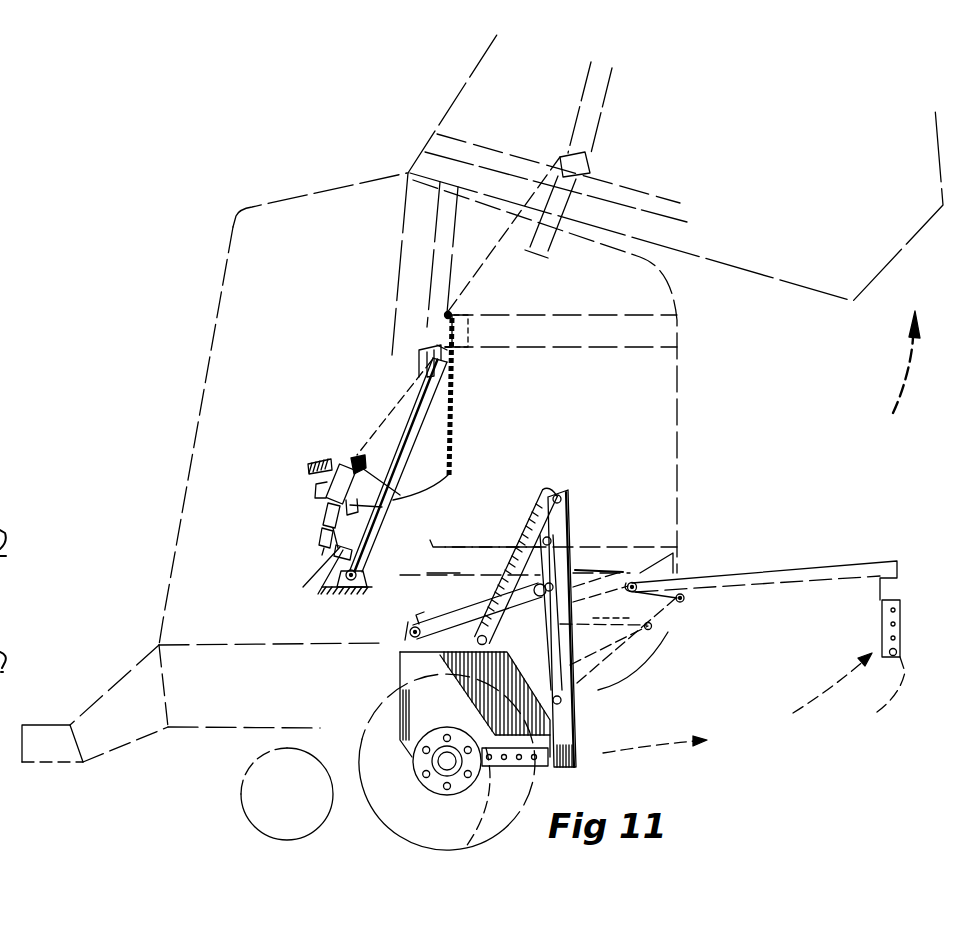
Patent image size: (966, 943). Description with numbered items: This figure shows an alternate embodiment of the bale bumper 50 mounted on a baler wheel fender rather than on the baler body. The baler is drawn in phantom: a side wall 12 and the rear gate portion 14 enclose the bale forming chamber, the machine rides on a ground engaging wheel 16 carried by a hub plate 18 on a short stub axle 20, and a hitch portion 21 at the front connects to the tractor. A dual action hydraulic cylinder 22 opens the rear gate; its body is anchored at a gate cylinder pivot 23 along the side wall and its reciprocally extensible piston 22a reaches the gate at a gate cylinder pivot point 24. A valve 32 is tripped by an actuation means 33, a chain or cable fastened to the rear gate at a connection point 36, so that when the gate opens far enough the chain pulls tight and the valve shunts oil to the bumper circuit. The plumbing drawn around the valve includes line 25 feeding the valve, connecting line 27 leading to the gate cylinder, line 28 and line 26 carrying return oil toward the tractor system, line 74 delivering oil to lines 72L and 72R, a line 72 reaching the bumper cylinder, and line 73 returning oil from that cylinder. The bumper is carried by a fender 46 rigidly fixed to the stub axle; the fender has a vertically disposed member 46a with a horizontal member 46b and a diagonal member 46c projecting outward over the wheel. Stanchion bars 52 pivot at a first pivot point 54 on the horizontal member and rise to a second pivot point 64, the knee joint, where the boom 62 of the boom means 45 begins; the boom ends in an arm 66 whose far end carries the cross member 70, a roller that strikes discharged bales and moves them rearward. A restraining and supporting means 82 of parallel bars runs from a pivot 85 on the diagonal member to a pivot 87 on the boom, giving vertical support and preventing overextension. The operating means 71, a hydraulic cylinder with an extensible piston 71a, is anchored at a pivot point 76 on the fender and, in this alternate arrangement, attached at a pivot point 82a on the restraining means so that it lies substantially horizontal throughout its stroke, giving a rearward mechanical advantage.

The side wall 12 is at (210, 297).
The rear gate portion 14 is at (846, 300).
The ground engaging wheel 16 is at (390, 808).
The hub plate 18 is at (450, 797).
The stub axle 20 is at (447, 766).
The hitch portion 21 is at (55, 764).
The dual action hydraulic cylinder 22 is at (410, 414).
The reciprocally extensible piston 22a is at (458, 347).
The gate cylinder pivot 23 is at (368, 580).
The gate cylinder pivot point 24 is at (473, 324).
The hydraulic line 25 is at (318, 484).
The hydraulic line 26 is at (414, 362).
The connecting line 27 is at (364, 541).
The return line 28 is at (440, 350).
The valve 32 is at (308, 466).
The actuation means 33 is at (508, 228).
The connection point 36 is at (561, 155).
The boom means 45 is at (580, 496).
The fender 46 is at (385, 653).
The vertically disposed member 46a is at (400, 703).
The horizontal member 46b is at (400, 661).
The diagonal member 46c is at (468, 722).
The bale bumper 50 is at (718, 502).
The stanchion bar 52 is at (523, 522).
The first pivot point 54 is at (443, 687).
The boom 62 is at (762, 572).
The second pivot point 64 is at (558, 495).
The arm 66 is at (882, 626).
The cross member 70 is at (685, 750).
The bale discharge operating means 71 is at (472, 592).
The reciprocally extensible piston 71a is at (603, 609).
The hydraulic line 72 is at (422, 620).
The hydraulic line 72L is at (320, 537).
The hydraulic line 72R is at (304, 559).
The return line 73 is at (419, 393).
The hydraulic line 74 is at (328, 506).
The pivot point 76 is at (409, 633).
The restraining and supporting means 82 is at (578, 537).
The pivot point 82a is at (563, 583).
The pivot 85 is at (574, 718).
The pivot 87 is at (576, 520).